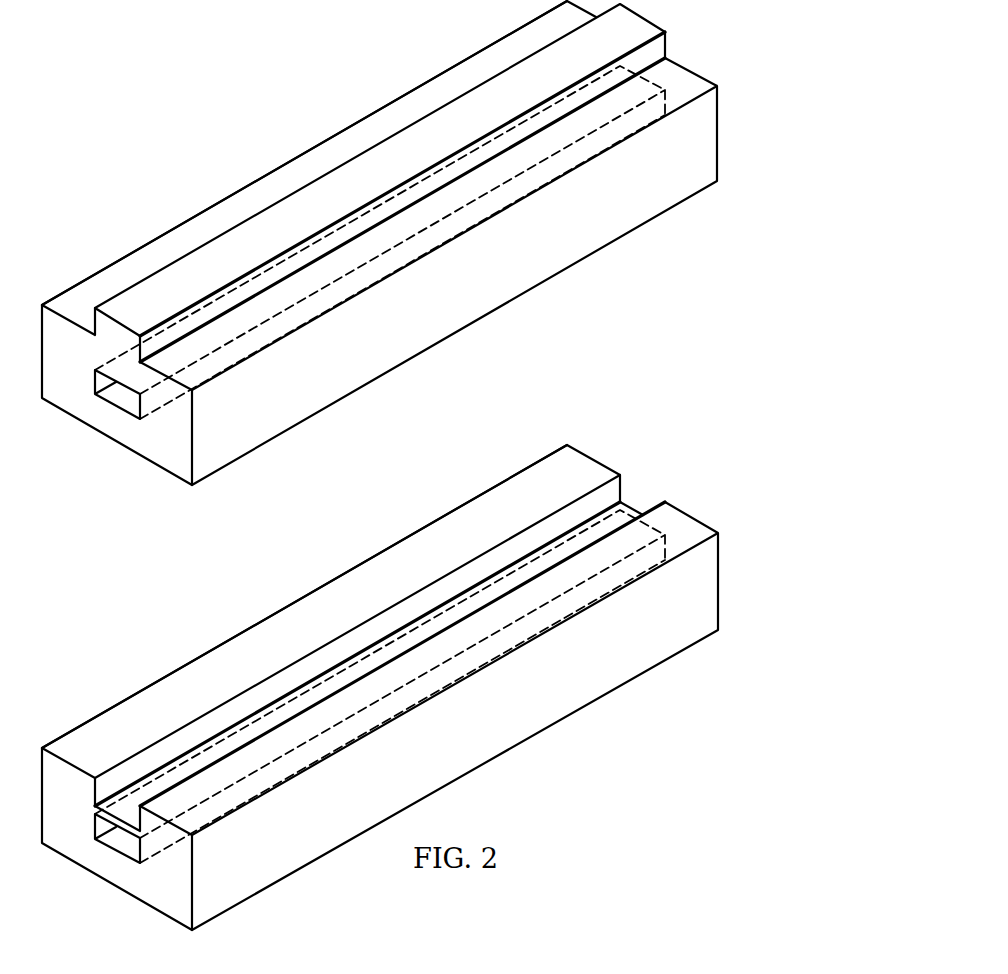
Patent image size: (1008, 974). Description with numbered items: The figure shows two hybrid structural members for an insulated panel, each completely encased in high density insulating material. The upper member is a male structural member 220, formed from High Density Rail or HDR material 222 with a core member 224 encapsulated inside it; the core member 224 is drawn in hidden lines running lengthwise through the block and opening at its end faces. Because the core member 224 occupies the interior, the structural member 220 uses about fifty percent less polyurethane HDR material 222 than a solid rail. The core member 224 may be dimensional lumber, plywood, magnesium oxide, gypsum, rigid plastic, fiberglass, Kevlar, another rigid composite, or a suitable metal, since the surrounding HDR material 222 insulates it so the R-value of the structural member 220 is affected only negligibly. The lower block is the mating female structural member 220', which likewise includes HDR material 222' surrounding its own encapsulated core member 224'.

The male structural member 220 is at (379, 243).
The high density insulating material 222 is at (304, 153).
The core member 224 is at (356, 257).
The female structural member 220' is at (380, 687).
The HDR material 222' is at (304, 596).
The core member 224' is at (354, 702).